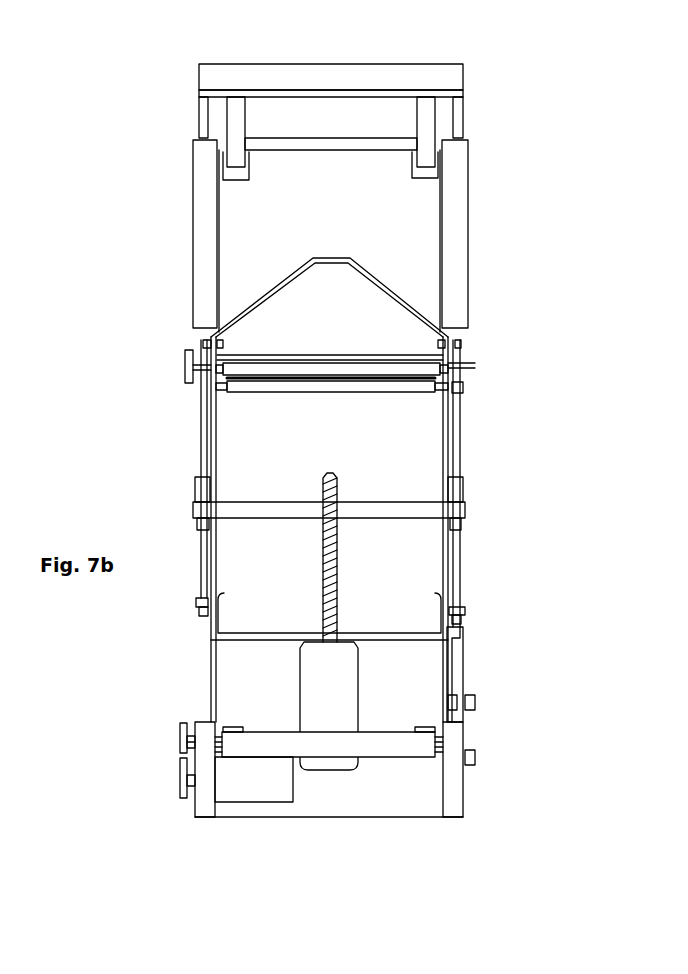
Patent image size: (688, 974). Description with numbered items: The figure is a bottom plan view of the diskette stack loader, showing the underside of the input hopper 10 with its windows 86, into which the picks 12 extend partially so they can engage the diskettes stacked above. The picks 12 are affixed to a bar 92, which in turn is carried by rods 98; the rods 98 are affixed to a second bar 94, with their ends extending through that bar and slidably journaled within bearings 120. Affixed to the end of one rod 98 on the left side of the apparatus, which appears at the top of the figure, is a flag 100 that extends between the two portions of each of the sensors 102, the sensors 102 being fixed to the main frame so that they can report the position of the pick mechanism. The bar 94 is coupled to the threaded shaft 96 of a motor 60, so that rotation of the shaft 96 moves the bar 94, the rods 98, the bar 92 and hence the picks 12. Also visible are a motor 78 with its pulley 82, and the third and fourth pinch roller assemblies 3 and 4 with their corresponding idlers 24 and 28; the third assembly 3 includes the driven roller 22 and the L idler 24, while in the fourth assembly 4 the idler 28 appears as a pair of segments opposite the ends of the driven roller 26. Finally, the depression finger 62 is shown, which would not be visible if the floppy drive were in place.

The bar 92 is at (307, 63).
The rods 98 is at (205, 117).
The picks 12 is at (233, 123).
The windows 86 is at (233, 181).
The input hopper 10 is at (430, 272).
The depression finger 62 is at (322, 258).
The bearings 120 is at (195, 602).
The third pinch roller assembly 3 is at (368, 358).
The driven roller 22 is at (246, 365).
The L idler 24 is at (265, 387).
The bar 94 is at (287, 507).
The threaded shaft 96 is at (320, 533).
The motor 60 is at (337, 658).
The driven roller 26 is at (370, 757).
The idler 28 is at (233, 727).
The fourth pinch roller assembly 4 is at (410, 765).
The motor 78 is at (283, 783).
The pulley 82 is at (182, 785).
The flag 100 is at (465, 658).
The sensors 102 is at (475, 752).